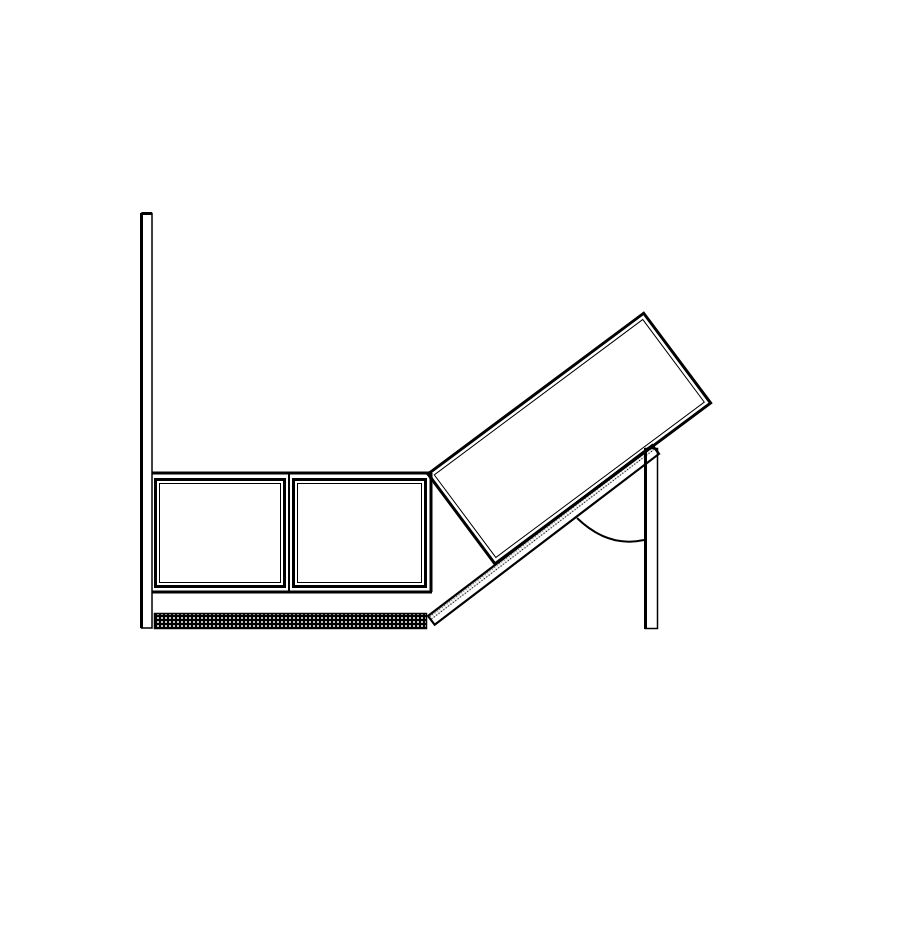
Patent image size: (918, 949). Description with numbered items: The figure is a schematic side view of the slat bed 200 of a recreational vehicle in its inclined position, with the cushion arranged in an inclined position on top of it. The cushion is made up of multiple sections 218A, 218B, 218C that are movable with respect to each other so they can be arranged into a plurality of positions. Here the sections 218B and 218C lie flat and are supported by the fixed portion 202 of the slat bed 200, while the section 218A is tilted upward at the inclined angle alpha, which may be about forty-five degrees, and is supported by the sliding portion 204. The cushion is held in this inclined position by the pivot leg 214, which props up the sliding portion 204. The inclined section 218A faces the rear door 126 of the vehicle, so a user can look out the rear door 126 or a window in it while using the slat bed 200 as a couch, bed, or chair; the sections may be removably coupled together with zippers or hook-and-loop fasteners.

The slat bed 200 is at (107, 72).
The rear door 126 is at (141, 265).
The fixed portion 202 is at (292, 624).
The sliding portion 204 is at (471, 590).
The pivot leg 214 is at (652, 553).
The section 218A is at (663, 338).
The section 218B is at (353, 473).
The section 218C is at (190, 473).